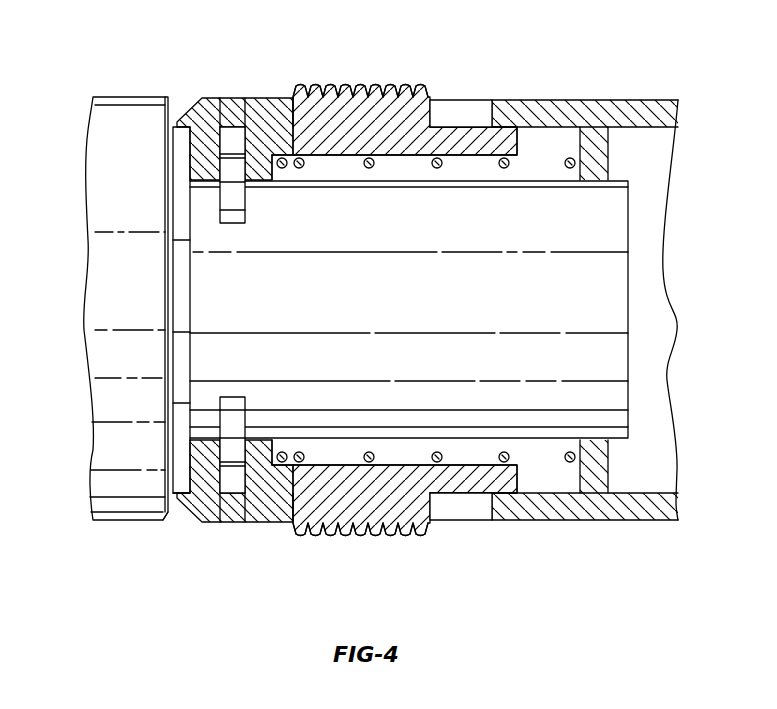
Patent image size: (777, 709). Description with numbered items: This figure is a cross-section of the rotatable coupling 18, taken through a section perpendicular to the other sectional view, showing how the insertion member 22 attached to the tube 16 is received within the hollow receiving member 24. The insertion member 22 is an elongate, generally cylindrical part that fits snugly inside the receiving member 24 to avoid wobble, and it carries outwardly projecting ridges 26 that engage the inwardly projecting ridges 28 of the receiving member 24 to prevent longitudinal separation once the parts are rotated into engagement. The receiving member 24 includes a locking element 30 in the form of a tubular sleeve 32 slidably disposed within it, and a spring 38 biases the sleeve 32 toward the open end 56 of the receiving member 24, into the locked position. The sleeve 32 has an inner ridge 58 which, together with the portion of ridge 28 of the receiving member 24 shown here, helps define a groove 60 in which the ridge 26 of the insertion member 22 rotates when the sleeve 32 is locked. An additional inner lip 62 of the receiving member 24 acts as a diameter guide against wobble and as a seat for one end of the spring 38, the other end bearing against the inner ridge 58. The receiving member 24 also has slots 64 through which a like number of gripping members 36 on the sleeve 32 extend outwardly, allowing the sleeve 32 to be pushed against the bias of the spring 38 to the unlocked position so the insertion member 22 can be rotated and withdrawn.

The tube 16 is at (140, 308).
The rotatable coupling 18 is at (184, 552).
The insertion member 22 is at (440, 238).
The receiving member 24 is at (287, 98).
The outwardly projecting ridges 26 is at (236, 192).
The inwardly projecting ridges 28 is at (200, 98).
The locking element 30 is at (481, 126).
The sleeve 32 is at (488, 142).
The gripping members 36 is at (384, 99).
The spring 38 is at (368, 168).
The open end 56 is at (164, 506).
The inner ridge 58 is at (261, 98).
The groove 60 is at (232, 98).
The lip 62 is at (597, 157).
The slots 64 is at (455, 108).